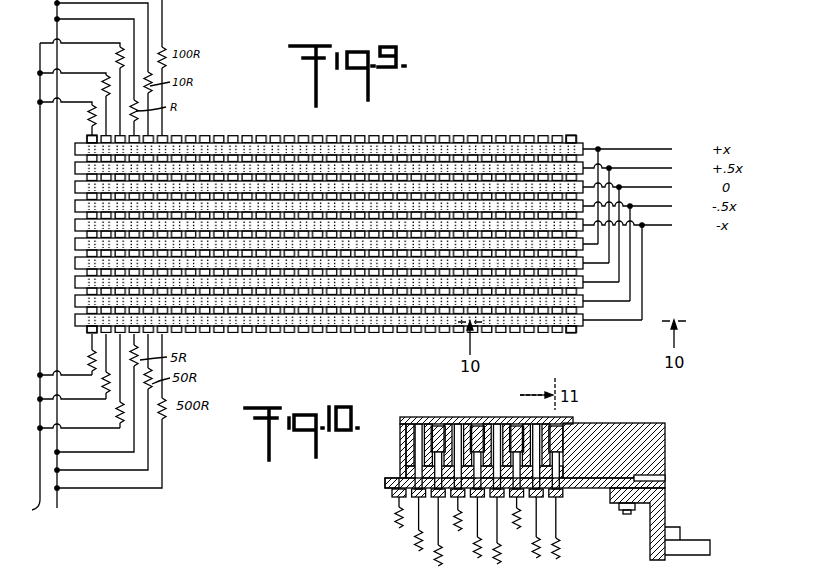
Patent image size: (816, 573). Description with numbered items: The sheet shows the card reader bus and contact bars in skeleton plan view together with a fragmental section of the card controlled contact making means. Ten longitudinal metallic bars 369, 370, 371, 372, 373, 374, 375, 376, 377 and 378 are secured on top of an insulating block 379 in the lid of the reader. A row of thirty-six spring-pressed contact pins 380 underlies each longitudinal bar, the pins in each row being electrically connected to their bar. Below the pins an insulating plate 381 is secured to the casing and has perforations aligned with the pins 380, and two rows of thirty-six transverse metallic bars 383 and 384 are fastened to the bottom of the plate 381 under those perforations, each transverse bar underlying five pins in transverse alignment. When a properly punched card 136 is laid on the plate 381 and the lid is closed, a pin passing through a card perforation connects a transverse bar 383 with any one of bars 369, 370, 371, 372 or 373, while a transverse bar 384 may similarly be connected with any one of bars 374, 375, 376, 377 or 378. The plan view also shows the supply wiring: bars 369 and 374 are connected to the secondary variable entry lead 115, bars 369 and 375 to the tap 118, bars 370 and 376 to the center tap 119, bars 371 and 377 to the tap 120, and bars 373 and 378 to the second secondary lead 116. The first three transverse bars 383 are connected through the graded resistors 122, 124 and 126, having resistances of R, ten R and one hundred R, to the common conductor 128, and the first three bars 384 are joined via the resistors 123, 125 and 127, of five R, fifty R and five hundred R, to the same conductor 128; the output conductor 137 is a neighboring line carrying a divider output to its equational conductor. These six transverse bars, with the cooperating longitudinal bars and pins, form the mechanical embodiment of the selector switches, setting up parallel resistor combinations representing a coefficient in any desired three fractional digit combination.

In FIG. 9, the secondary lead 115 is at (644, 192).
In FIG. 9, the secondary lead 116 is at (644, 268).
In FIG. 9, the tap 118 is at (644, 211).
In FIG. 9, the center tap 119 is at (644, 230).
In FIG. 9, the tap 120 is at (644, 249).
In FIG. 9, the graded resistor 122 is at (92, 126).
In FIG. 9, the graded resistor 123 is at (92, 341).
In FIG. 9, the graded resistor 124 is at (105, 92).
In FIG. 9, the graded resistor 125 is at (104, 380).
In FIG. 9, the graded resistor 126 is at (120, 43).
In FIG. 9, the graded resistor 127 is at (120, 428).
In FIG. 9, the common conductor 128 is at (21, 279).
In FIG. 10, the punch card 136 is at (392, 478).
In FIG. 9, the conductor 137 is at (57, 500).
In FIG. 9, the longitudinal metallic bar 369 is at (75, 147).
In FIG. 9, the longitudinal metallic bar 370 is at (75, 166).
In FIG. 9, the longitudinal metallic bar 371 is at (75, 185).
In FIG. 9, the longitudinal metallic bar 372 is at (75, 204).
In FIG. 9, the longitudinal metallic bar 373 is at (75, 223).
In FIG. 9, the longitudinal metallic bar 374 is at (75, 242).
In FIG. 9, the longitudinal metallic bar 375 is at (75, 261).
In FIG. 9, the longitudinal metallic bar 376 is at (75, 280).
In FIG. 9, the longitudinal metallic bar 377 is at (75, 299).
In FIG. 9, the longitudinal metallic bar 378 is at (75, 318).
In FIG. 10, the longitudinal metallic bar 378 is at (452, 417).
In FIG. 10, the insulating block 379 is at (608, 426).
In FIG. 10, the spring-pressed contact pin 380 is at (572, 490).
In FIG. 10, the insulating plate 381 is at (390, 487).
In FIG. 9, the transverse metallic bar 383 is at (86, 135).
In FIG. 9, the transverse metallic bar 384 is at (75, 333).
In FIG. 10, the transverse metallic bar 384 is at (400, 500).